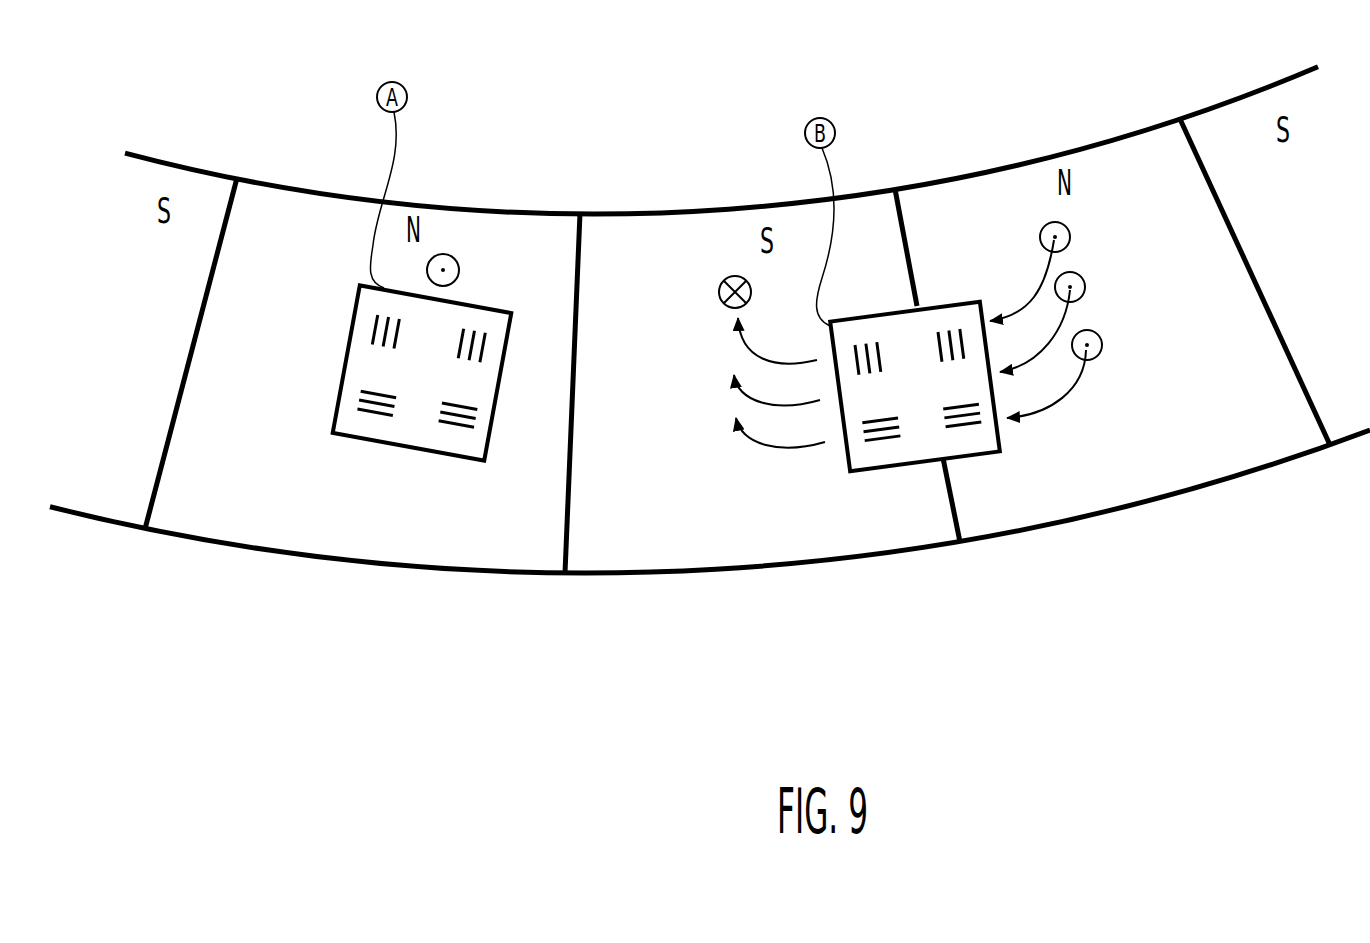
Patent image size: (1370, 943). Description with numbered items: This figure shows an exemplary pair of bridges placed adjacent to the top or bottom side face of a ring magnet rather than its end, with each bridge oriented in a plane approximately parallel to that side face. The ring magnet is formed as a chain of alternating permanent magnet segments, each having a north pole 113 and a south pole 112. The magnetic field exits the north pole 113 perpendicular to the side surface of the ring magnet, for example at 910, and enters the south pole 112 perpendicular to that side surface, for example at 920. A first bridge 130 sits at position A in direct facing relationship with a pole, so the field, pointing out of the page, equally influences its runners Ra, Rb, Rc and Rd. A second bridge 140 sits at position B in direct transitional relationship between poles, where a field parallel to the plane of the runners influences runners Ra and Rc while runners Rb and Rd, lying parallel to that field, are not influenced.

The south pole 112 is at (743, 572).
The north pole 113 is at (398, 568).
The bridge 130 is at (348, 347).
The bridge 140 is at (952, 296).
The magnetic field exit location 910 is at (460, 272).
The magnetic field entry location 920 is at (718, 290).